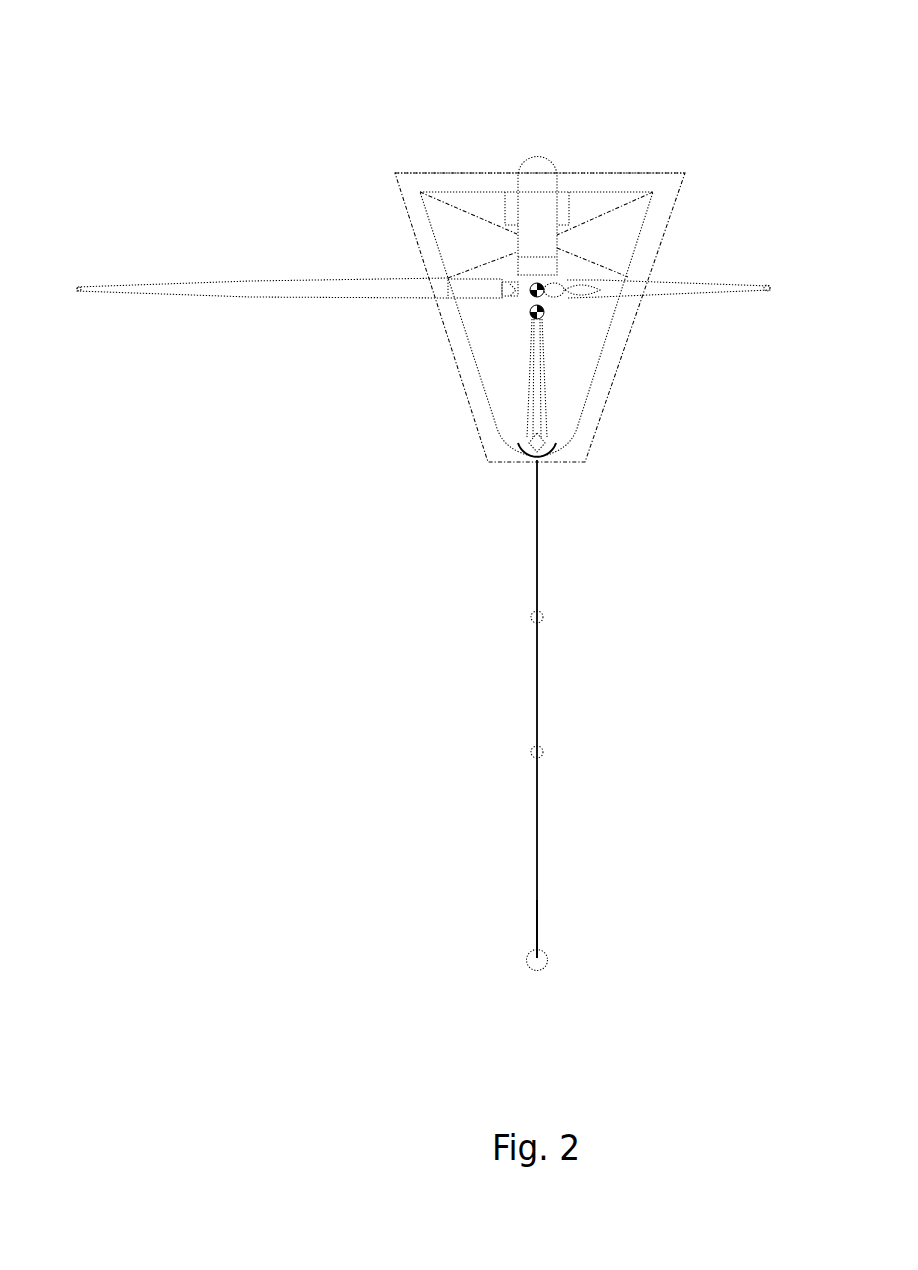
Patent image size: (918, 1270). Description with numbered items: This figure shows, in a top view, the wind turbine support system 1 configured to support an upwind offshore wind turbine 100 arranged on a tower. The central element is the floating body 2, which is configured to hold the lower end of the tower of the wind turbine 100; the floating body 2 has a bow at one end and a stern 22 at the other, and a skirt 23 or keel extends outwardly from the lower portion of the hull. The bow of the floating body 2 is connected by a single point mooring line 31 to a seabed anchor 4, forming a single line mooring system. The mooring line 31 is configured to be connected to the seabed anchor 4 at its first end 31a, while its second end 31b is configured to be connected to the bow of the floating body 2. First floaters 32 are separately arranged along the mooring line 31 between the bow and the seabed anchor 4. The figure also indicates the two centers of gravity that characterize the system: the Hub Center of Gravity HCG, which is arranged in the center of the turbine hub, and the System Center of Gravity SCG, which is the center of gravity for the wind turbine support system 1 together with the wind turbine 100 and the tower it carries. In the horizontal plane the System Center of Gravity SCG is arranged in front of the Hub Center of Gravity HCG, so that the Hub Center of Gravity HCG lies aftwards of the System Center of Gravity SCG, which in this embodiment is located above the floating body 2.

The wind turbine support system 1 is at (528, 345).
The floating body 2 is at (595, 200).
The stern 22 is at (580, 192).
The skirt 23 is at (662, 197).
The wind turbine 100 is at (537, 187).
The Hub Center of Gravity HCG is at (530, 287).
The System Center of Gravity SCG is at (532, 316).
The mooring line 31 is at (538, 672).
The first end 31a is at (538, 462).
The second end 31b is at (538, 930).
The first floaters 32 is at (543, 618).
The seabed anchor 4 is at (545, 967).